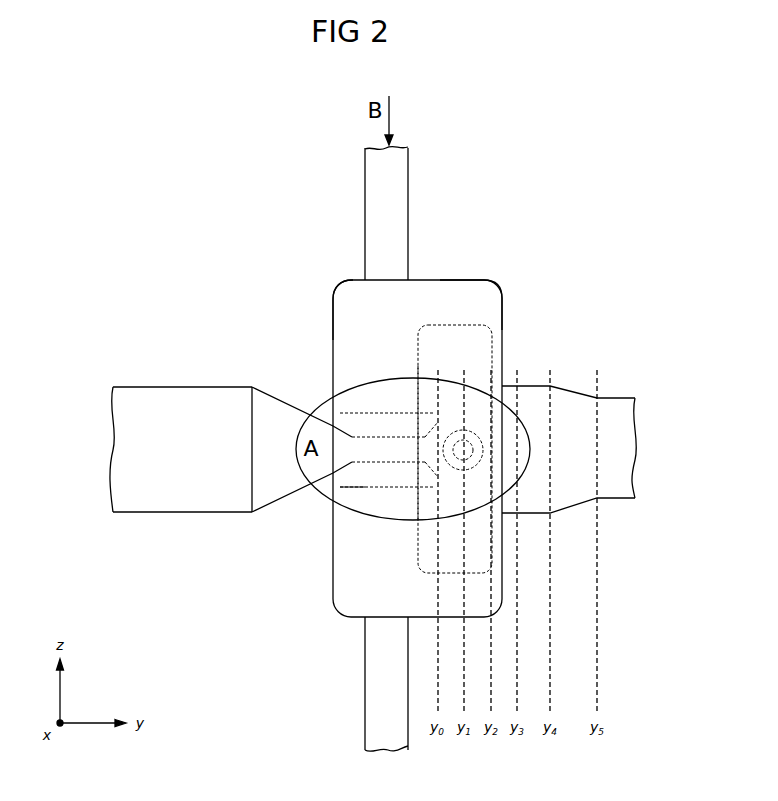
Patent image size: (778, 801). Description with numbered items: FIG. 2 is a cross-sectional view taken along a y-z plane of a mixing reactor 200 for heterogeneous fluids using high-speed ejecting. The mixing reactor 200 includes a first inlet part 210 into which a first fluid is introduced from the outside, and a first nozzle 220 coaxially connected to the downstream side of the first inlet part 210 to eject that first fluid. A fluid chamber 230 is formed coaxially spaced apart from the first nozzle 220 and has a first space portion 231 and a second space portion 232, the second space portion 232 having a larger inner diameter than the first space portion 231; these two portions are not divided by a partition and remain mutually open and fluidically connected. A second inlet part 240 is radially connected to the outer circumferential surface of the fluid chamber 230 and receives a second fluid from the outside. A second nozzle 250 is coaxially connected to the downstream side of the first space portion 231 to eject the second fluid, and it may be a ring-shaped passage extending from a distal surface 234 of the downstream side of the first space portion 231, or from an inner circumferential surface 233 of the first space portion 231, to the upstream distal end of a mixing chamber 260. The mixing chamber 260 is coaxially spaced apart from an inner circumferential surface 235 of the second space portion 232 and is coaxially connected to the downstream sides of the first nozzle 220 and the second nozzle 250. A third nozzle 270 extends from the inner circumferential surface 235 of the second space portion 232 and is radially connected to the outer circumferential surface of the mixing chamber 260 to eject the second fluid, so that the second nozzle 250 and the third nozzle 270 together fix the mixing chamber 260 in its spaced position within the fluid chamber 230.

The mixing reactor 200 is at (197, 192).
The first inlet part 210 is at (168, 387).
The first nozzle 220 is at (290, 407).
The fluid chamber 230 is at (345, 280).
The first space portion 231 is at (348, 323).
The second space portion 232 is at (477, 307).
The inner circumferential surface 233 is at (363, 487).
The distal surface 234 is at (418, 367).
The inner circumferential surface 235 is at (420, 324).
The second inlet part 240 is at (365, 208).
The second nozzle 250 is at (340, 490).
The mixing chamber 260 is at (533, 386).
The third nozzle 270 is at (486, 449).